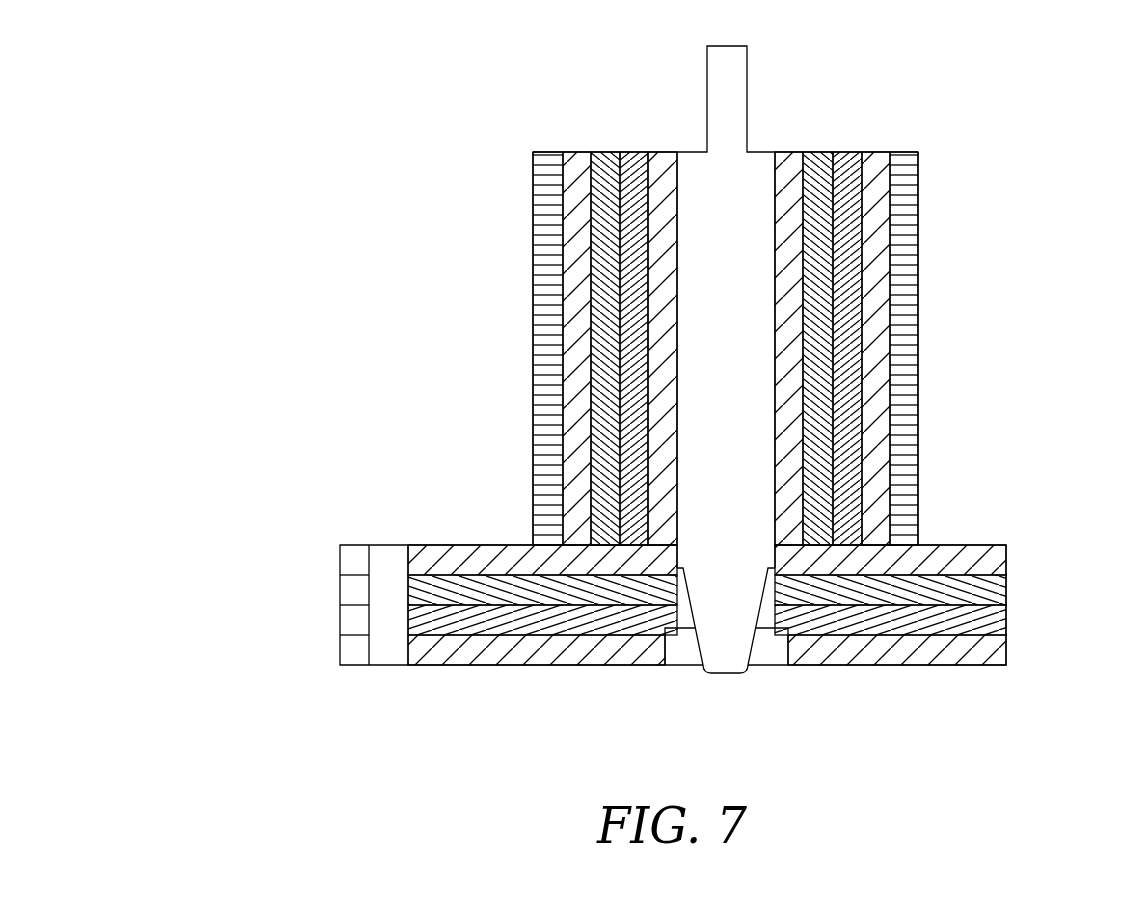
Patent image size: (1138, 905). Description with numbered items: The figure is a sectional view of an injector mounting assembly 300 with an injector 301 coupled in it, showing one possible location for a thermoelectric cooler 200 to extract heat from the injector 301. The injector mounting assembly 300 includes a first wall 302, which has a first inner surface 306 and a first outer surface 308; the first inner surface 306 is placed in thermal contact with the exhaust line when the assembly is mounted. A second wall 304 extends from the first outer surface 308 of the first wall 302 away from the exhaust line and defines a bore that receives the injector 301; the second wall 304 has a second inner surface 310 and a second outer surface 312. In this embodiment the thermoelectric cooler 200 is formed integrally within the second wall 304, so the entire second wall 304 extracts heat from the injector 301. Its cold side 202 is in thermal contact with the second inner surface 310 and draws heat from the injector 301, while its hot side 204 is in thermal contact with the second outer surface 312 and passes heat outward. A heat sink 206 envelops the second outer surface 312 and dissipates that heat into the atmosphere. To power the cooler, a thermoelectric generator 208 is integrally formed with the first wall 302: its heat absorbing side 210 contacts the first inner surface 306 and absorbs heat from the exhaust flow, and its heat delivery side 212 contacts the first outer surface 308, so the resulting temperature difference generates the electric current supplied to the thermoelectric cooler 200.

The thermoelectric cooler 200 is at (835, 272).
The cold side 202 is at (833, 136).
The hot side 204 is at (862, 90).
The heat sink 206 is at (538, 175).
The thermoelectric generator 208 is at (601, 606).
The heat absorbing side 210 is at (323, 605).
The heat delivery side 212 is at (323, 575).
The injector mounting assembly 300 is at (578, 70).
The injector 301 is at (691, 152).
The first wall 302 is at (665, 614).
The second wall 304 is at (555, 315).
The first inner surface 306 is at (972, 666).
The first outer surface 308 is at (968, 545).
The second inner surface 310 is at (680, 422).
The second outer surface 312 is at (568, 307).